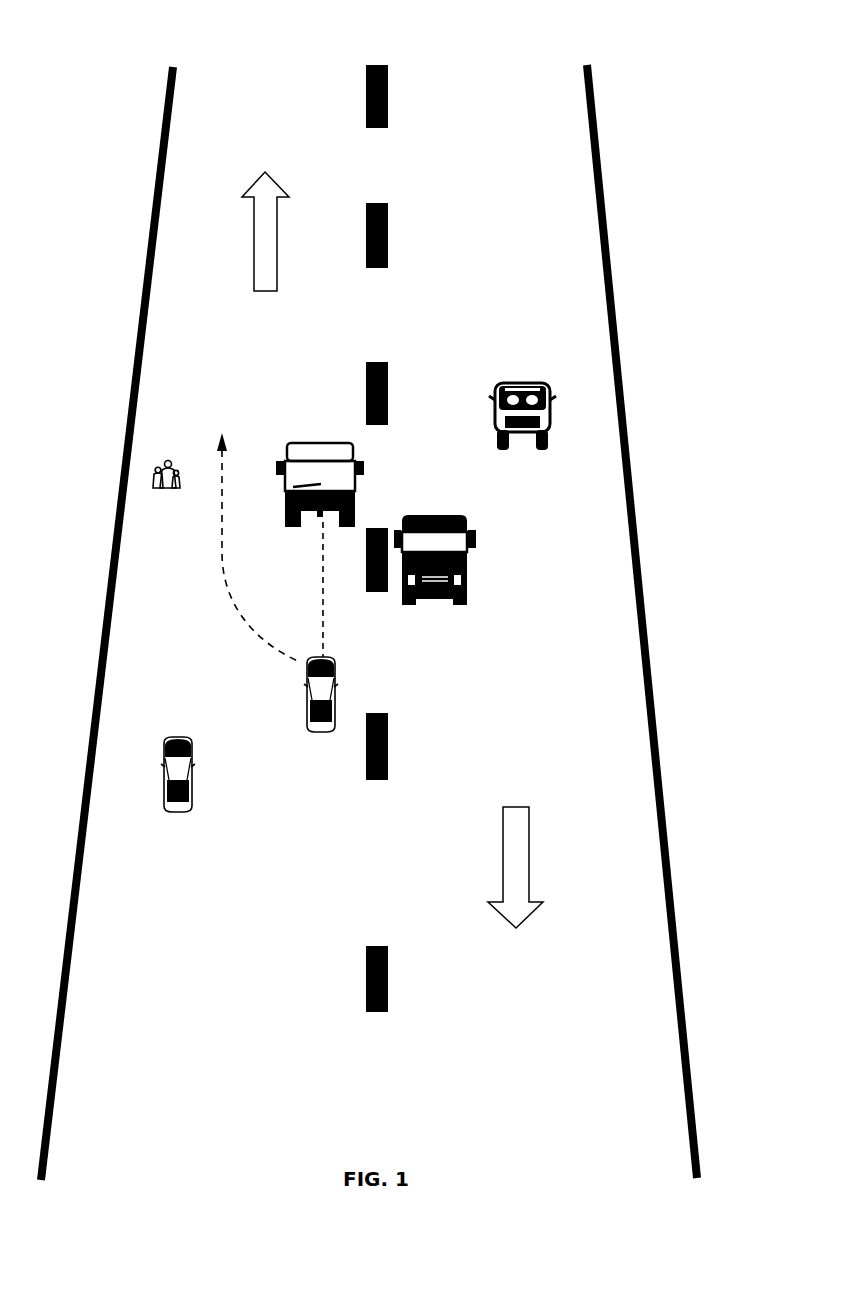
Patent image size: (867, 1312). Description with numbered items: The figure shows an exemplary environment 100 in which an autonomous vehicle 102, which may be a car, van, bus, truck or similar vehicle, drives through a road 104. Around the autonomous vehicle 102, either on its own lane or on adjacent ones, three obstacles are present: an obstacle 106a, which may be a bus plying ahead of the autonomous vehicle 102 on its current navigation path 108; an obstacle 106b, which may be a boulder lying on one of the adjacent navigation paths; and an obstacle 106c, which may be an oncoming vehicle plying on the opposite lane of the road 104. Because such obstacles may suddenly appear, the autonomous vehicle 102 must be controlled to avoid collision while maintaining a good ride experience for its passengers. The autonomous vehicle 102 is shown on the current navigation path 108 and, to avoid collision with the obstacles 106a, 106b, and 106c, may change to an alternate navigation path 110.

The environment 100 is at (248, 71).
The autonomous vehicle 102 is at (339, 700).
The road 104 is at (662, 782).
The obstacle 106a is at (357, 482).
The obstacle 106b is at (166, 461).
The obstacle 106c is at (467, 572).
The current navigation path 108 is at (325, 640).
The alternate navigation path 110 is at (228, 570).